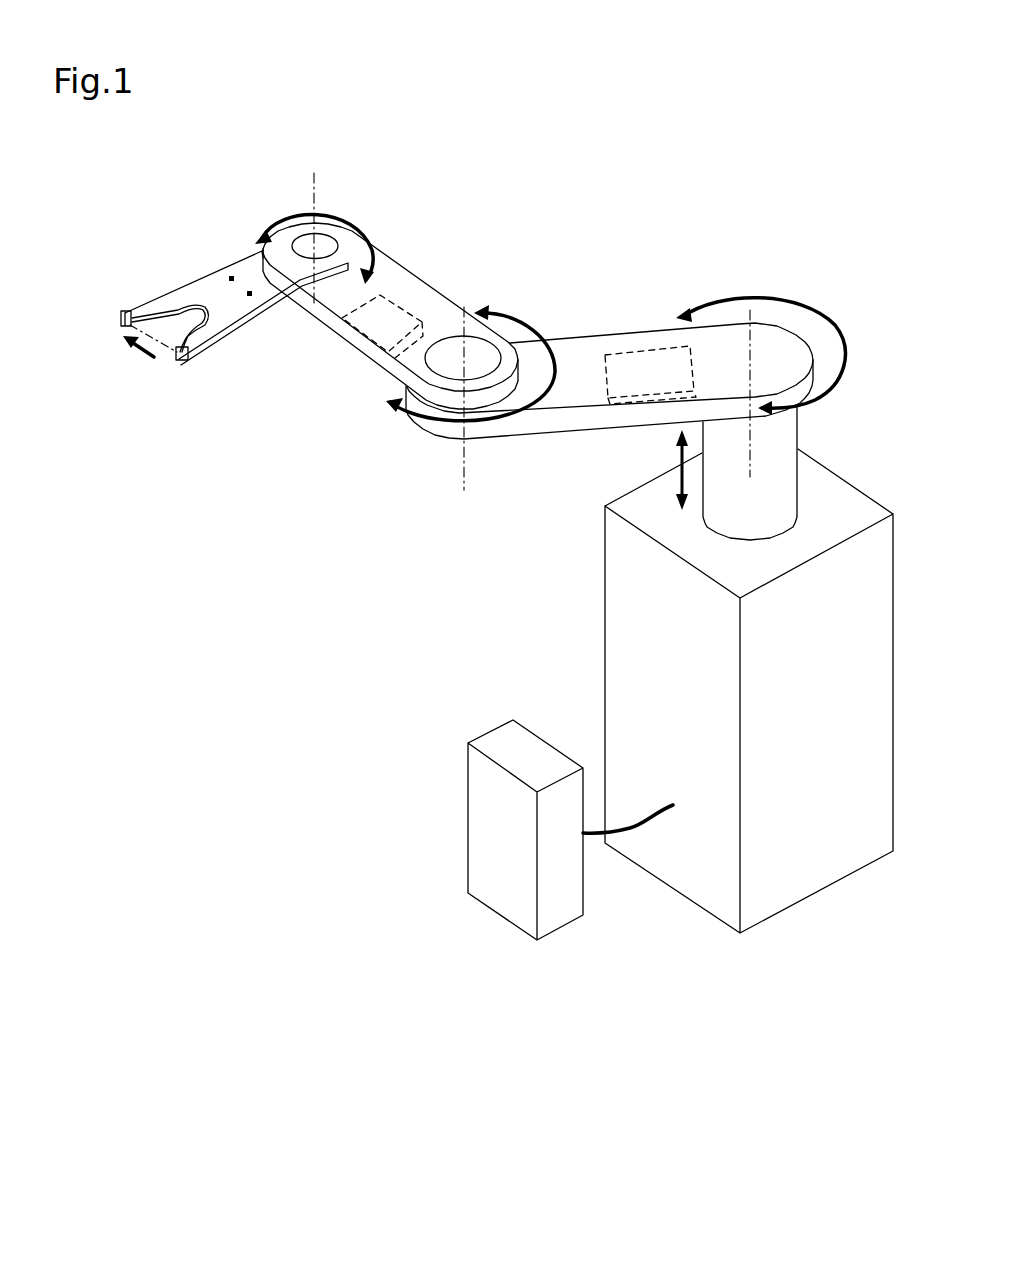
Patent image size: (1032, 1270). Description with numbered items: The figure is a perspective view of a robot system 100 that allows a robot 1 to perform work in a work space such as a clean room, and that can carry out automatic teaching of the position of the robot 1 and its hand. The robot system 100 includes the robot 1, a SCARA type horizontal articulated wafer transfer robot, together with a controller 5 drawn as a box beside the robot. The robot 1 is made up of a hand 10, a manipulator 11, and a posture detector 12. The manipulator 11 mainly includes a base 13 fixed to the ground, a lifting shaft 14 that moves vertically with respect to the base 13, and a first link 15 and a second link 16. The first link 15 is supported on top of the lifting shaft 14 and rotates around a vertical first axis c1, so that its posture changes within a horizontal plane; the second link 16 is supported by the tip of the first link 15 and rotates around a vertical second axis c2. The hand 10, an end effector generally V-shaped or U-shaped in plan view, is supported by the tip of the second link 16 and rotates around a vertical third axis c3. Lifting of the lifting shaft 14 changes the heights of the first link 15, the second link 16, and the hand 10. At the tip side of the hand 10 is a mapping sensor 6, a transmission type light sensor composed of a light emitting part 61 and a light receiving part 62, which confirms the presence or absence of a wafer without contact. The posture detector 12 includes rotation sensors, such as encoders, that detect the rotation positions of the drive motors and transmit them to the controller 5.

The robot system 100 is at (183, 962).
The robot 1 is at (830, 220).
The controller 5 is at (493, 836).
The base 13 is at (620, 640).
The lifting shaft 14 is at (773, 443).
The manipulator 11 is at (609, 378).
The posture detector 12 is at (390, 312).
The first link 15 is at (547, 423).
The second link 16 is at (330, 323).
The hand 10 is at (162, 303).
The mapping sensor 6 is at (203, 350).
The light emitting part 61 is at (173, 358).
The light receiving part 62 is at (124, 318).
The first axis c1 is at (812, 345).
The second axis c2 is at (462, 459).
The third axis c3 is at (312, 183).